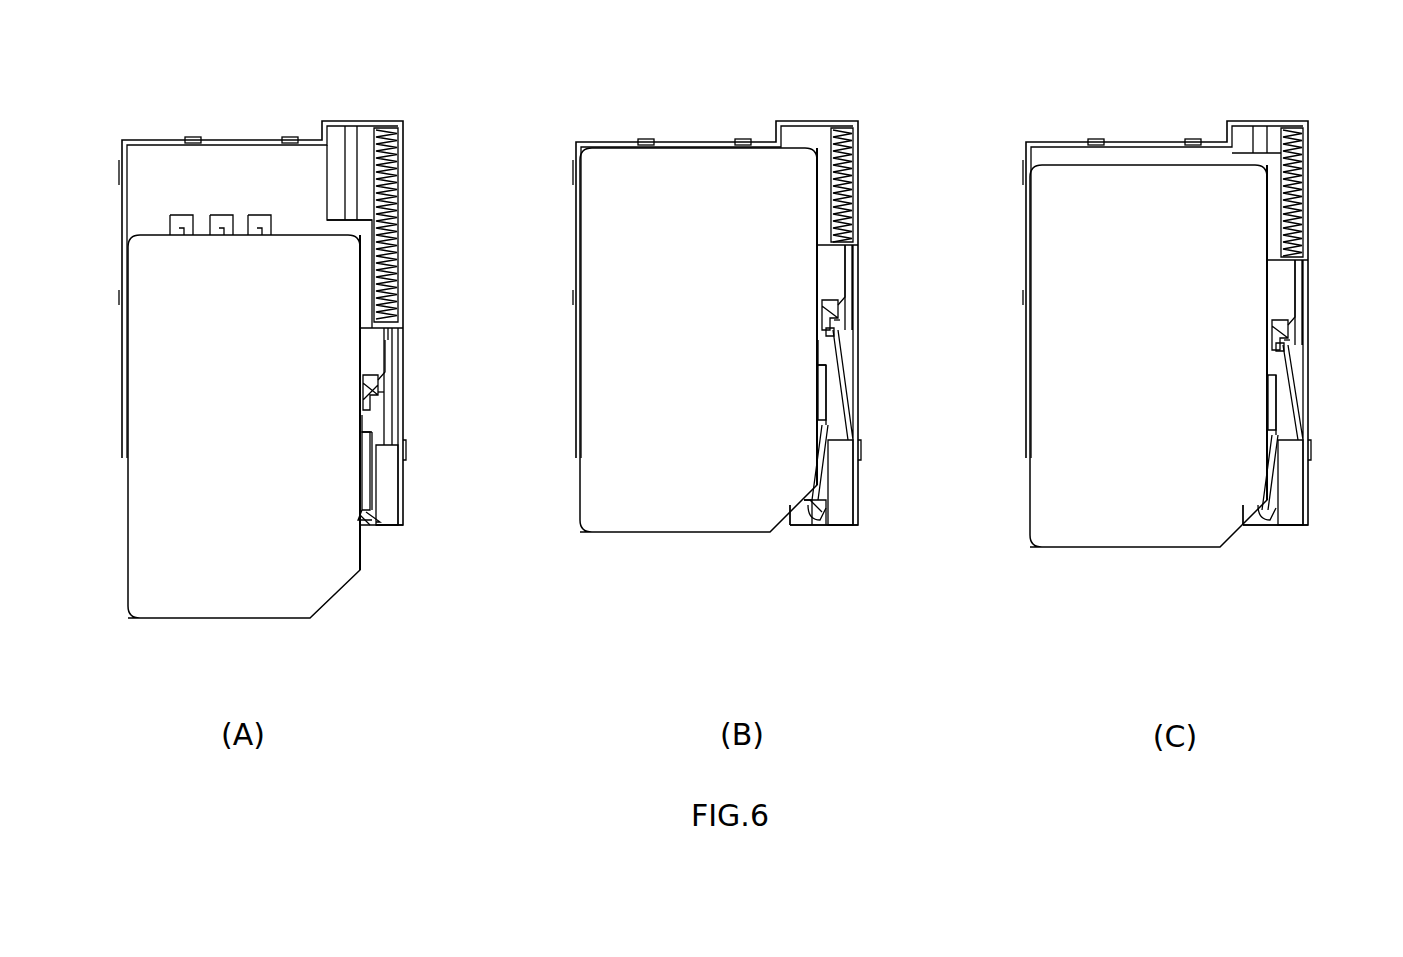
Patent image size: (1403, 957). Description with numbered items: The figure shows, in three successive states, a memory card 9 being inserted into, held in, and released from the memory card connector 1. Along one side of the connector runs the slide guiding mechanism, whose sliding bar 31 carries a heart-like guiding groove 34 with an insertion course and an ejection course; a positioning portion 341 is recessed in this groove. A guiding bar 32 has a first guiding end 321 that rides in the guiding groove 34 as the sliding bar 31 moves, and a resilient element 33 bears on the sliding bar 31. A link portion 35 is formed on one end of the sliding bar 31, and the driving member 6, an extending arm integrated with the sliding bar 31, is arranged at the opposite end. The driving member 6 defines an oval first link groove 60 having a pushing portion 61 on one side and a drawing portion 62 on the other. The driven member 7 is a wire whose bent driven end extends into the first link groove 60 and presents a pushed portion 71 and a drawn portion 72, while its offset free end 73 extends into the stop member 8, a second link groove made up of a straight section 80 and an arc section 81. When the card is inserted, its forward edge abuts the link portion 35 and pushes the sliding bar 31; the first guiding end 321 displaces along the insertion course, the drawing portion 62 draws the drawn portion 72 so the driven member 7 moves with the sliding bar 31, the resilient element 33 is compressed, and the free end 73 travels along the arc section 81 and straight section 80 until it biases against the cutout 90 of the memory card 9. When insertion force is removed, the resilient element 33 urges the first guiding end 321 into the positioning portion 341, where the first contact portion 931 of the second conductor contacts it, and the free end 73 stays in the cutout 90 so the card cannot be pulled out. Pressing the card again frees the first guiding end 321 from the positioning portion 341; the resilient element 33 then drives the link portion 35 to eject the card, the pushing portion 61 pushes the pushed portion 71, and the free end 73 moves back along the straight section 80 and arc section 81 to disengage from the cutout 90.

The memory card connector 1 is at (135, 82).
The driving member 6 is at (352, 521).
The driven member 7 is at (374, 470).
The stop member 8 is at (805, 655).
The memory card 9 is at (176, 622).
The sliding bar 31 is at (364, 343).
The guiding bar 32 is at (392, 410).
The resilient element 33 is at (397, 156).
The guiding groove 34 is at (368, 390).
The link portion 35 is at (348, 222).
The first link groove 60 is at (364, 490).
The pushing portion 61 is at (361, 426).
The drawing portion 62 is at (812, 455).
The pushed portion 71 is at (366, 460).
The drawn portion 72 is at (818, 415).
The free end 73 is at (376, 518).
The straight section 80 is at (826, 508).
The arc section 81 is at (354, 518).
The cutout 90 is at (783, 522).
The first guiding end 321 is at (393, 328).
The positioning portion 341 is at (381, 390).
The first contact portion 931 is at (383, 396).